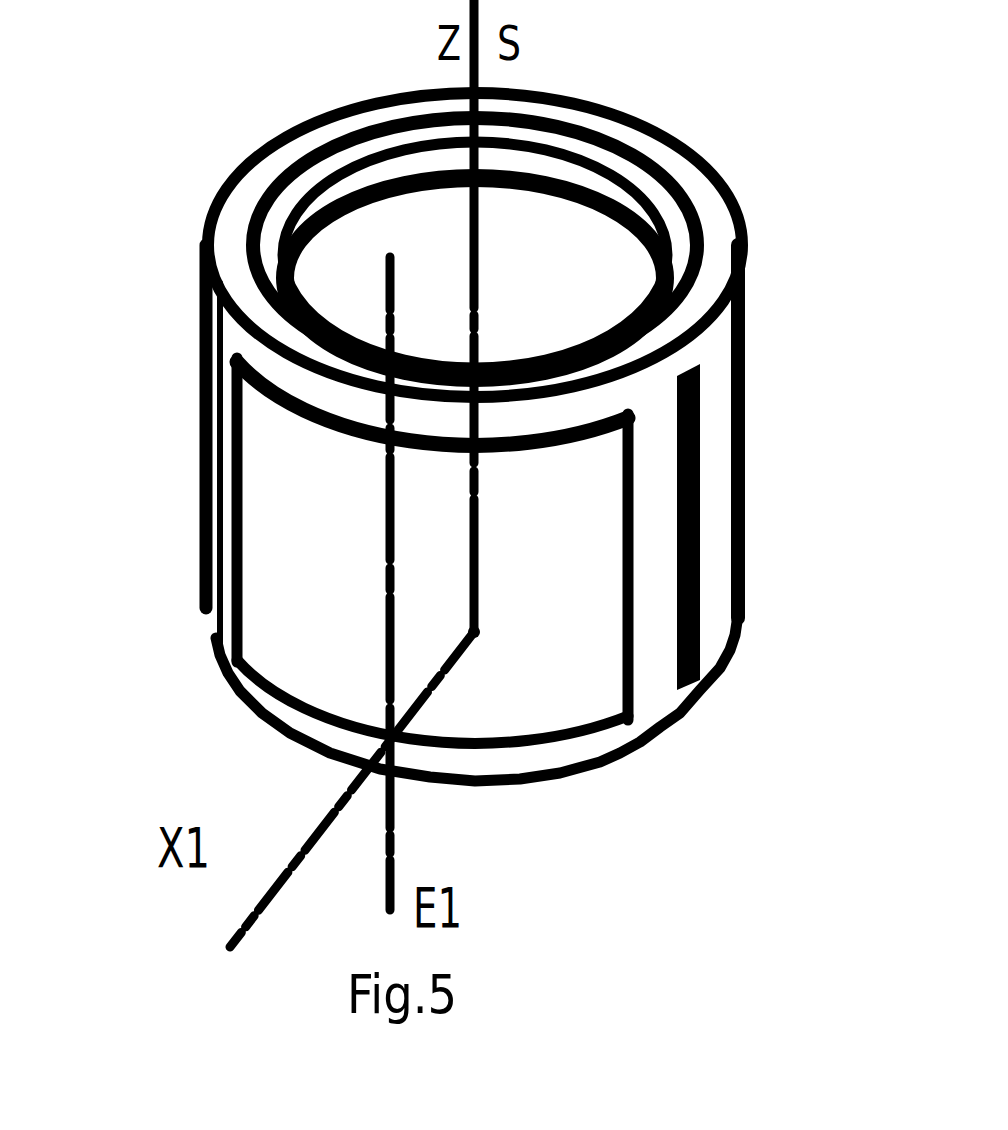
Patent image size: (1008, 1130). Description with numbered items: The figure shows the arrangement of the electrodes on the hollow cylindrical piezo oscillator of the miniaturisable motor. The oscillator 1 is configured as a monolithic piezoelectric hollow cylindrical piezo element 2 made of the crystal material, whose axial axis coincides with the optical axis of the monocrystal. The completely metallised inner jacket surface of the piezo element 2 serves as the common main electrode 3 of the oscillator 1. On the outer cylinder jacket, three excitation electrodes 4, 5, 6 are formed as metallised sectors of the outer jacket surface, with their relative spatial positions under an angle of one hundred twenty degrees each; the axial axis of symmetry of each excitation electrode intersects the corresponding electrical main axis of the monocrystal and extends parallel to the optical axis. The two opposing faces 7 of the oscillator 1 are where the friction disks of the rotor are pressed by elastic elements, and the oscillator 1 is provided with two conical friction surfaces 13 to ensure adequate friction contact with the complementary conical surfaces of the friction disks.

The oscillator 1 is at (477, 401).
The piezo element 2 is at (702, 223).
The common main electrode 3 is at (588, 250).
The excitation electrode 4 is at (308, 600).
The excitation electrode 5 is at (172, 418).
The excitation electrode 6 is at (715, 483).
The opposing faces 7 is at (156, 198).
The conical friction surfaces 13 is at (568, 148).